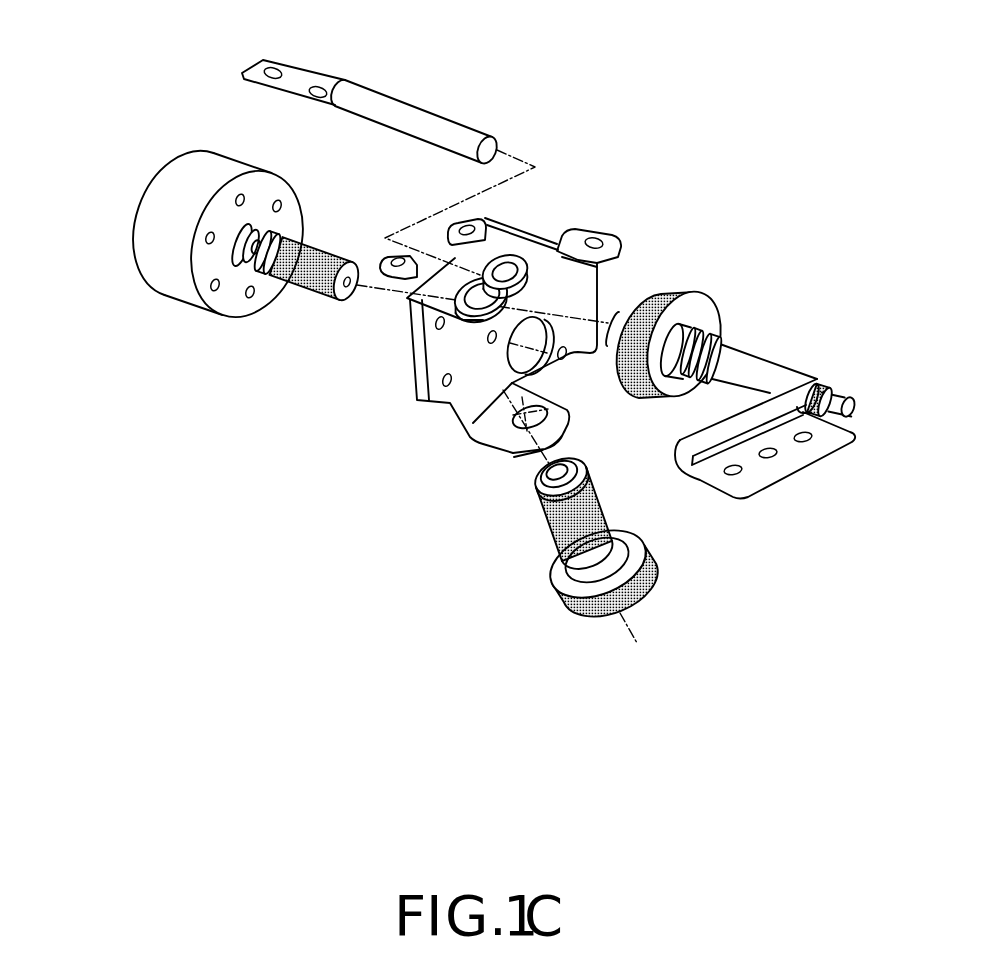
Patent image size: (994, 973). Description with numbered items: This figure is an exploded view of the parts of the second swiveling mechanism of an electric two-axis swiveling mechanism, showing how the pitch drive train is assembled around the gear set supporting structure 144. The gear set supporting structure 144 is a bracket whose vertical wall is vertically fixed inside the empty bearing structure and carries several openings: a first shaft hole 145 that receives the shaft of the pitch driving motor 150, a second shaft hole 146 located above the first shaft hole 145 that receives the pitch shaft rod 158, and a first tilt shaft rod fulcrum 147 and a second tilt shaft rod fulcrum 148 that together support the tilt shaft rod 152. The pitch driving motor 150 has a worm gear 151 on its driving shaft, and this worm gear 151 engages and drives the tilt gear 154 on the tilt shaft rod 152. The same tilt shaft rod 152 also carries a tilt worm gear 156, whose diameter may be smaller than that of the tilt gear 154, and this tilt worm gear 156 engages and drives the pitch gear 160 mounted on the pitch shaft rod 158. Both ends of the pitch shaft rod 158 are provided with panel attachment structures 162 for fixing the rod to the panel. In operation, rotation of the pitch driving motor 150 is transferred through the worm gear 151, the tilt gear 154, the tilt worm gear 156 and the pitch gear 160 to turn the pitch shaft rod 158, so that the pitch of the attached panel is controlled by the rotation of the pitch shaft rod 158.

The gear set supporting structure 144 is at (595, 232).
The first shaft hole 145 is at (527, 370).
The second shaft hole 146 is at (507, 265).
The first tilt shaft rod fulcrum 147 is at (477, 307).
The second tilt shaft rod fulcrum 148 is at (525, 430).
The pitch driving motor 150 is at (172, 185).
The worm gear 151 is at (313, 277).
The tilt shaft rod 152 is at (477, 686).
The tilt gear 154 is at (590, 613).
The tilt worm gear 156 is at (565, 528).
The pitch shaft rod 158 is at (932, 296).
The pitch gear 160 is at (670, 288).
The panel attachment structures 162 is at (457, 130).